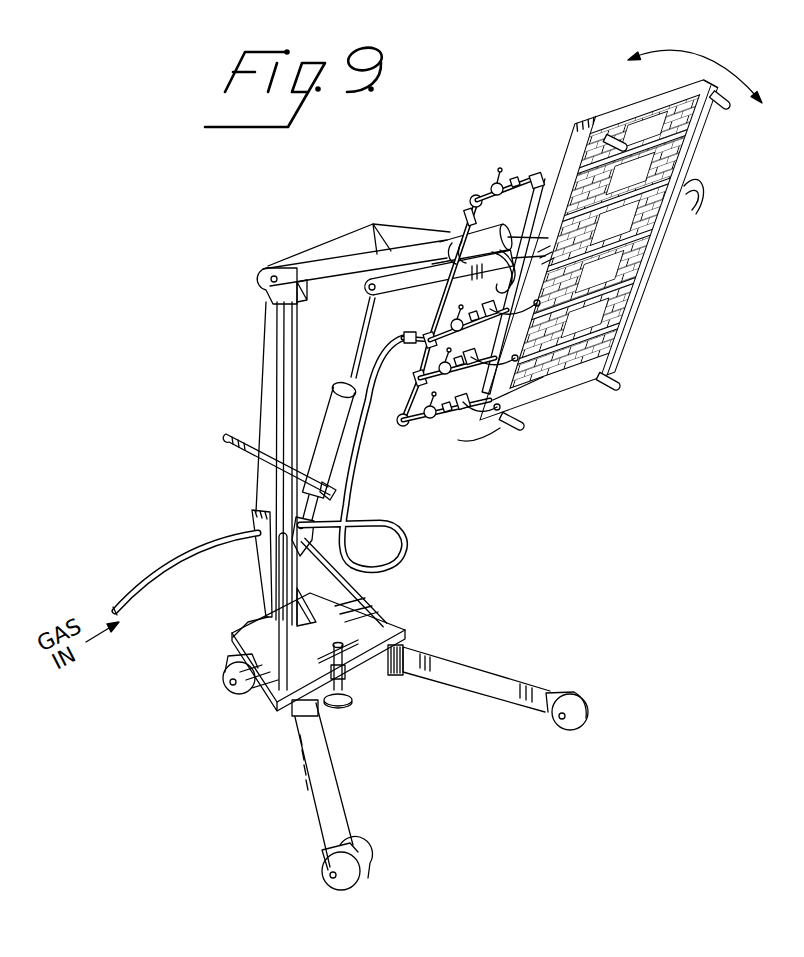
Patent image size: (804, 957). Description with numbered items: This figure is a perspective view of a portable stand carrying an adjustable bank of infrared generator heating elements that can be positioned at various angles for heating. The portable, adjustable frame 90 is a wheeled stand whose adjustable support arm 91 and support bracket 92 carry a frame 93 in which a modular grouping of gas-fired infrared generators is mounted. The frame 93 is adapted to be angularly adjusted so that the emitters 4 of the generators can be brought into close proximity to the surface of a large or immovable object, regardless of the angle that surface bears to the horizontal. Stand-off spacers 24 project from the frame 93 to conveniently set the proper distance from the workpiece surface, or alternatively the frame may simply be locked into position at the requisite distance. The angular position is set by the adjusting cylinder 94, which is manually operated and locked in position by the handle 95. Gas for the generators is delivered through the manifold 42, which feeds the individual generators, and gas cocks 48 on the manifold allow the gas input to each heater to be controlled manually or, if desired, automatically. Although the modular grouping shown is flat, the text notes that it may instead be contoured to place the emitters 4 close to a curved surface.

The emitters 4 is at (568, 337).
The stand-off spacers 24 is at (715, 97).
The manifold 42 is at (405, 400).
The gas cocks 48 is at (428, 422).
The portable adjustable frame 90 is at (252, 758).
The adjustable support arm 91 is at (340, 263).
The support bracket 92 is at (420, 278).
The frame 93 is at (623, 117).
The adjusting cylinder 94 is at (340, 417).
The handle 95 is at (252, 457).